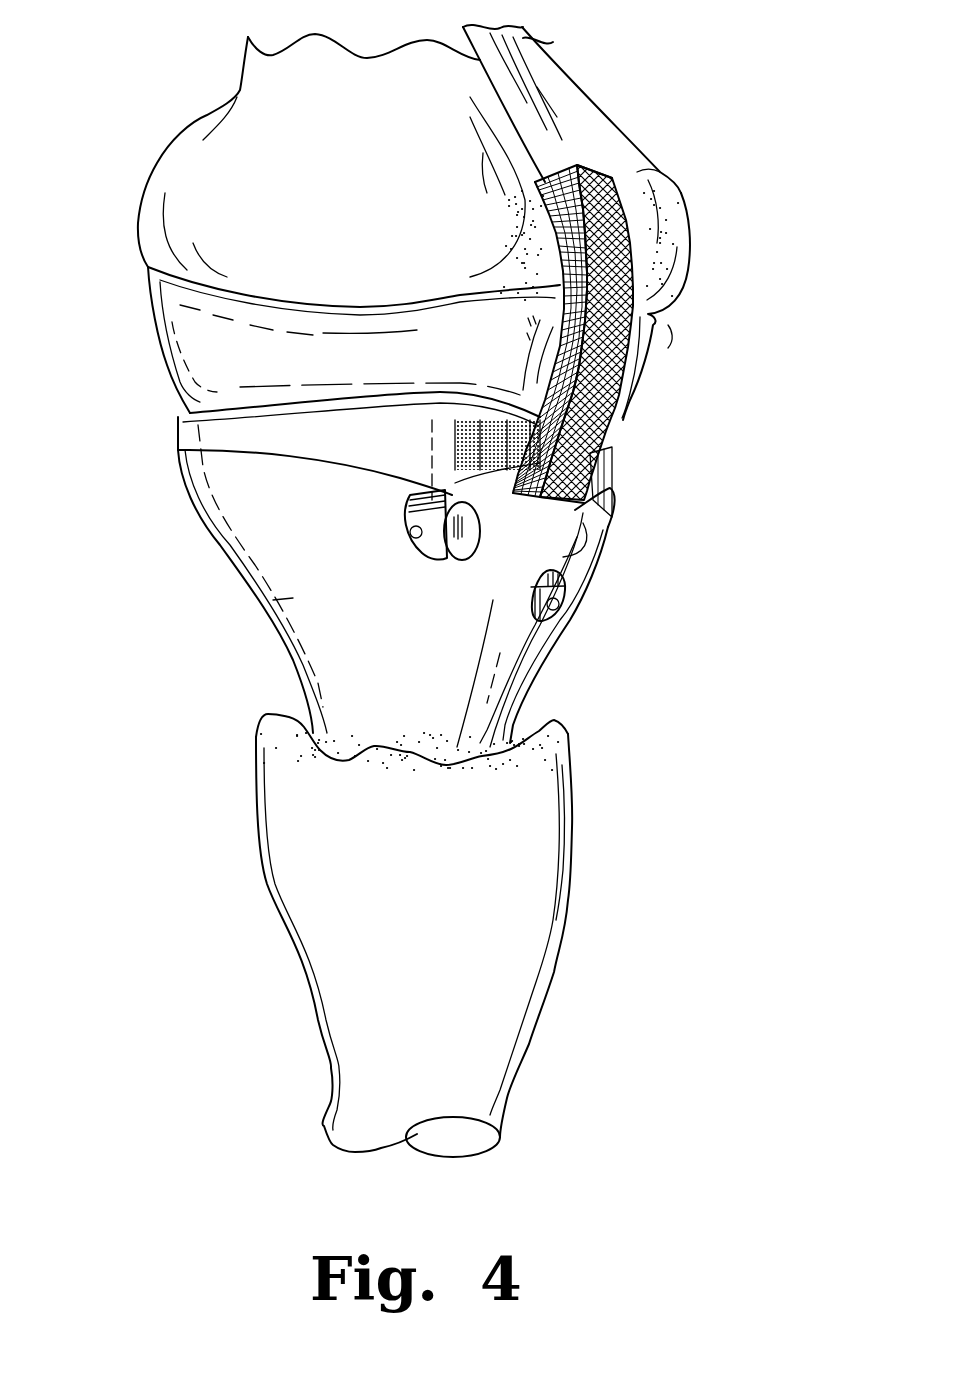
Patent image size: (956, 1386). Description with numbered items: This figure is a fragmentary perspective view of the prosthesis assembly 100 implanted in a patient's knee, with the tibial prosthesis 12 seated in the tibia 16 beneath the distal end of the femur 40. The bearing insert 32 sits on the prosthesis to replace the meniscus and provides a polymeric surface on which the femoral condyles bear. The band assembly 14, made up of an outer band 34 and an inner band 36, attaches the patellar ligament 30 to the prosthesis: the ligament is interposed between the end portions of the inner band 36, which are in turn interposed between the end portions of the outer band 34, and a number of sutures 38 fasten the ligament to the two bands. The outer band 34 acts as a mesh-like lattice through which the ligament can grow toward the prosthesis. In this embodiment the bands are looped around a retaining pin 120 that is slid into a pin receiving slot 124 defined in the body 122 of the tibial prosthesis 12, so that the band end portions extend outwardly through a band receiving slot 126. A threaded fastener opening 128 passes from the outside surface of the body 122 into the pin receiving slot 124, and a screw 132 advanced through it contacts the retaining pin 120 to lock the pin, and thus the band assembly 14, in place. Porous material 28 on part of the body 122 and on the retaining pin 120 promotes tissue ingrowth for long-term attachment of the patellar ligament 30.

The tibial prosthesis 12 is at (267, 511).
The band assembly 14 is at (620, 198).
The tibia 16 is at (493, 932).
The porous material 28 is at (455, 445).
The patellar ligament 30 is at (530, 80).
The bearing insert 32 is at (214, 332).
The outer band 34 is at (620, 482).
The inner band 36 is at (563, 413).
The sutures 38 is at (560, 367).
The femur 40 is at (605, 132).
The prosthesis assembly 100 is at (670, 329).
The retaining pin 120 is at (462, 556).
The body 122 is at (287, 600).
The pin receiving slot 124 is at (415, 537).
The band receiving slot 126 is at (607, 520).
The threaded fastener opening 128 is at (557, 617).
The screw 132 is at (565, 587).